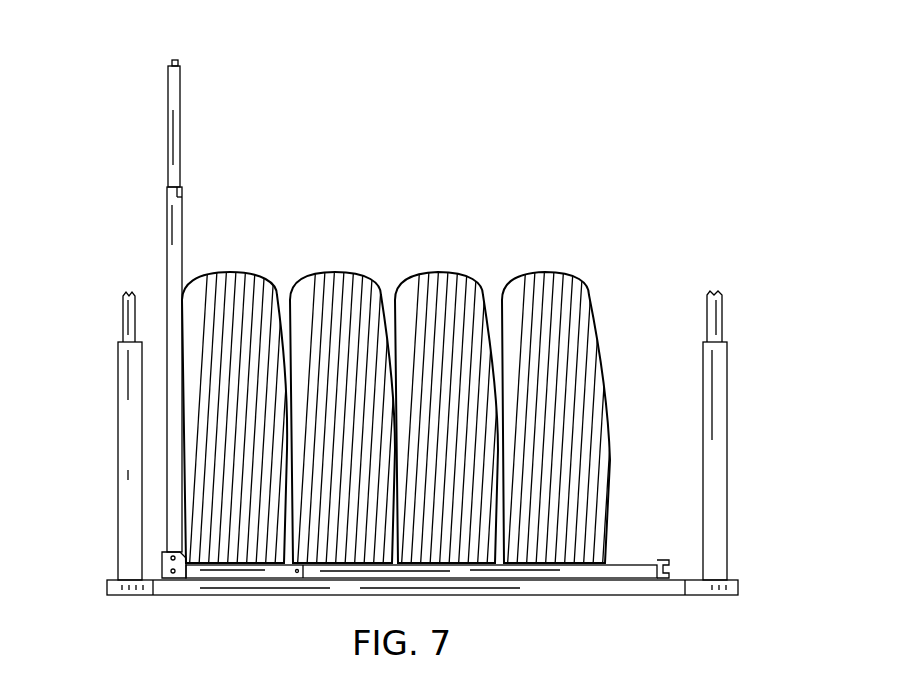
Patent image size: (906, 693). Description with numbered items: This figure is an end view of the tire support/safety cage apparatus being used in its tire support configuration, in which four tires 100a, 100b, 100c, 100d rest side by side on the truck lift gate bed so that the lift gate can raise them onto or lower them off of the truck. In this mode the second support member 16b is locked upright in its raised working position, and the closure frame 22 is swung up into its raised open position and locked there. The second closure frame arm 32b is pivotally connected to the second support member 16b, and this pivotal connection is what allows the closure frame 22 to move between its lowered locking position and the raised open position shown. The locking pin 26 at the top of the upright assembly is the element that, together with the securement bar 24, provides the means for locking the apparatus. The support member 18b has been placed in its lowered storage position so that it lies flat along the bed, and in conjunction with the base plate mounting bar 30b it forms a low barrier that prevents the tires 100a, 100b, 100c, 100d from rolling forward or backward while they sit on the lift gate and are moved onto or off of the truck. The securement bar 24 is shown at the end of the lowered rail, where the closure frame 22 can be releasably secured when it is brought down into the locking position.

The closure frame 22 is at (167, 290).
The locking pin 26 is at (183, 64).
The second closure frame arm 32b is at (168, 135).
The second support member 16b is at (168, 220).
The tire 100a is at (232, 270).
The tire 100b is at (330, 272).
The tire 100c is at (437, 272).
The tire 100d is at (540, 272).
The securement bar 24 is at (660, 562).
The base plate mounting bar 30b is at (248, 572).
The support member 18b is at (572, 572).